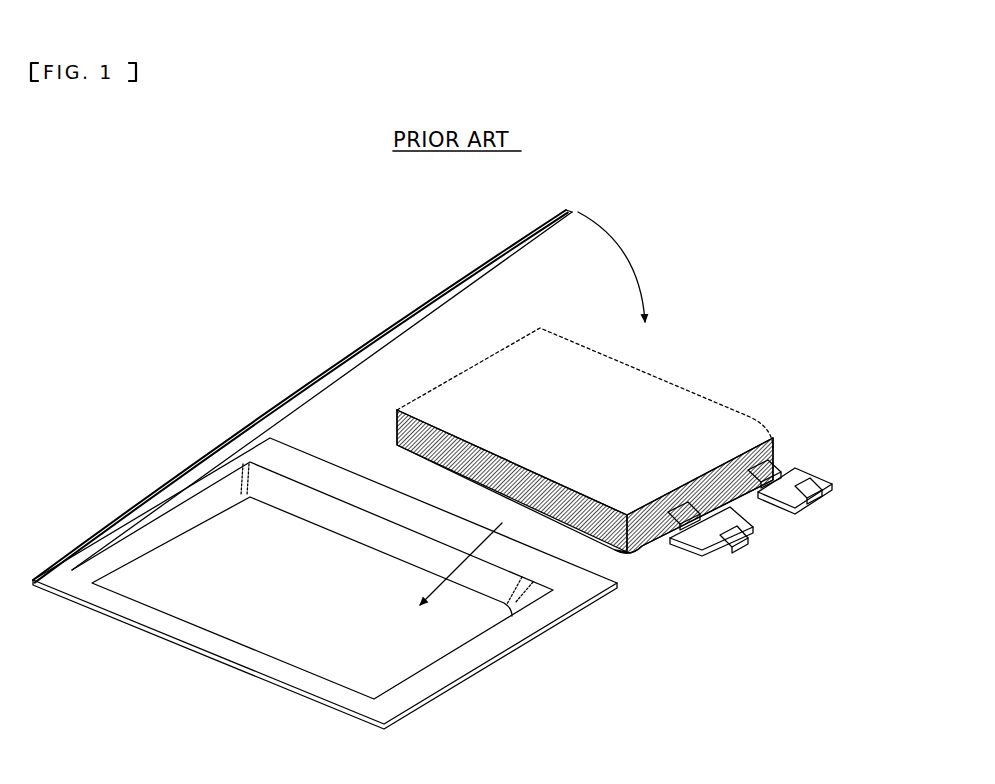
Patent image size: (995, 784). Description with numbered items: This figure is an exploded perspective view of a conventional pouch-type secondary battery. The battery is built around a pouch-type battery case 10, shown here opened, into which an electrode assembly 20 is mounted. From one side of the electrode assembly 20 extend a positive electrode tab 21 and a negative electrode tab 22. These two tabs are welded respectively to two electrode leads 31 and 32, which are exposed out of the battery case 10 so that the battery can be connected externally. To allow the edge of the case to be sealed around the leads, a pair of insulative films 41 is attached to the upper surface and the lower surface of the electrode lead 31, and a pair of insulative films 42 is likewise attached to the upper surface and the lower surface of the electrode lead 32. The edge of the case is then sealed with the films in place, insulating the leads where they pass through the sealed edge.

The pouch-type battery case 10 is at (158, 432).
The electrode assembly 20 is at (632, 415).
The positive electrode tab 21 is at (757, 470).
The negative electrode tab 22 is at (680, 530).
The electrode lead 31 is at (820, 490).
The electrode lead 32 is at (722, 548).
The insulative films 41 is at (786, 504).
The insulative films 42 is at (750, 536).